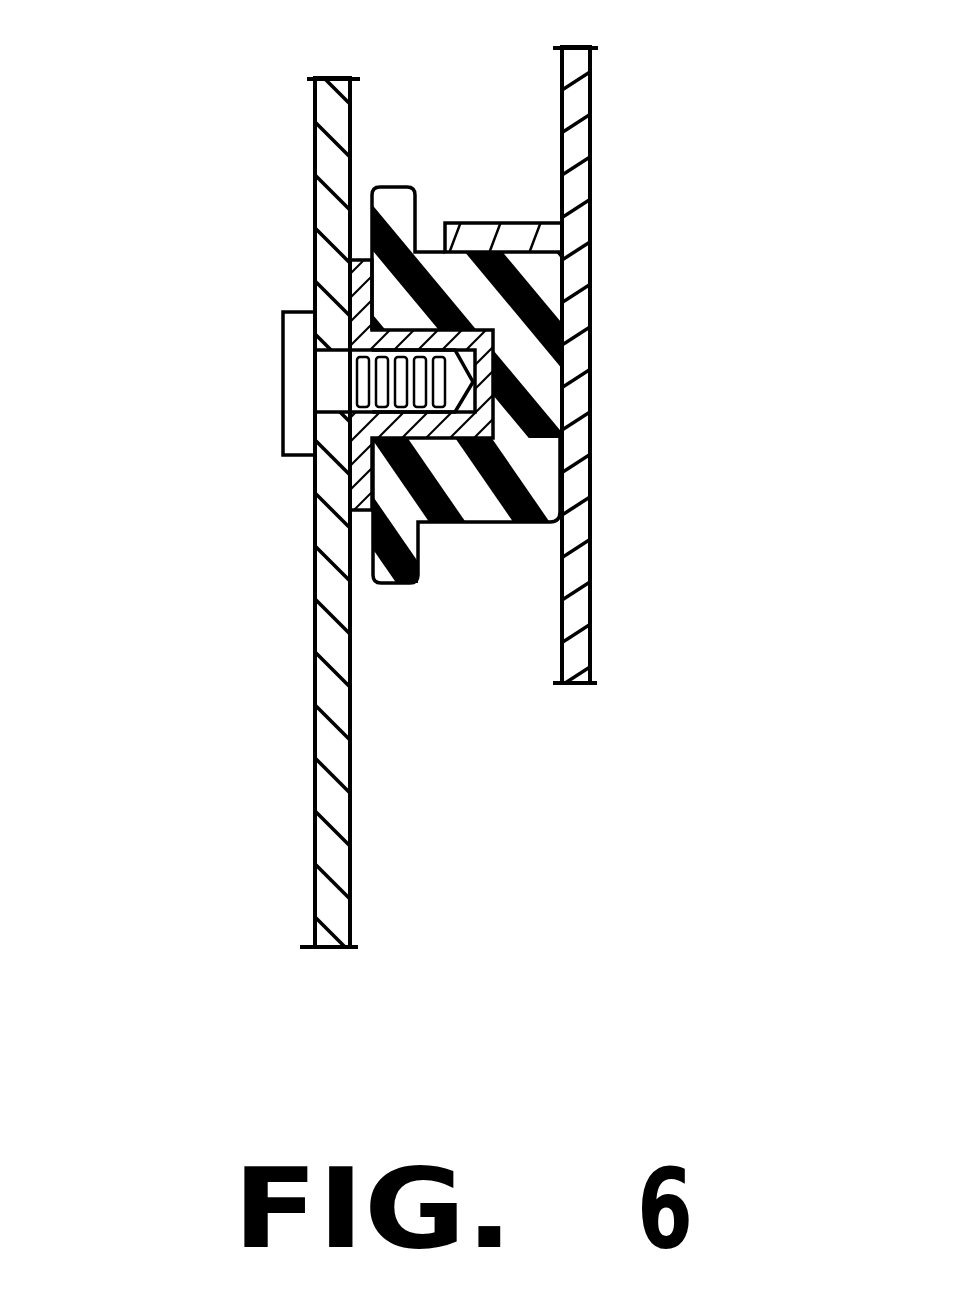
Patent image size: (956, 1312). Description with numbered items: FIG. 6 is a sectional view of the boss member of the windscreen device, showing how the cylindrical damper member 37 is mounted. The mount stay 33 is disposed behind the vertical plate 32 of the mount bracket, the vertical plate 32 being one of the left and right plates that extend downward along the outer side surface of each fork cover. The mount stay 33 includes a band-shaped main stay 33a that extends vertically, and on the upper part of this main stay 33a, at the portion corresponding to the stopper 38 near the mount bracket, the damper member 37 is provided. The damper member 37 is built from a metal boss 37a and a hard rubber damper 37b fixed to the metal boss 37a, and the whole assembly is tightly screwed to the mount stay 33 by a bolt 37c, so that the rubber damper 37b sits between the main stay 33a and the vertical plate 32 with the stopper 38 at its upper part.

The vertical plate 32 is at (612, 395).
The mount stay 33 is at (228, 527).
The main stay 33a is at (313, 682).
The damper member 37 is at (467, 545).
The metal boss 37a is at (438, 530).
The hard rubber damper 37b is at (513, 527).
The bolt 37c is at (283, 382).
The stopper 38 is at (496, 223).